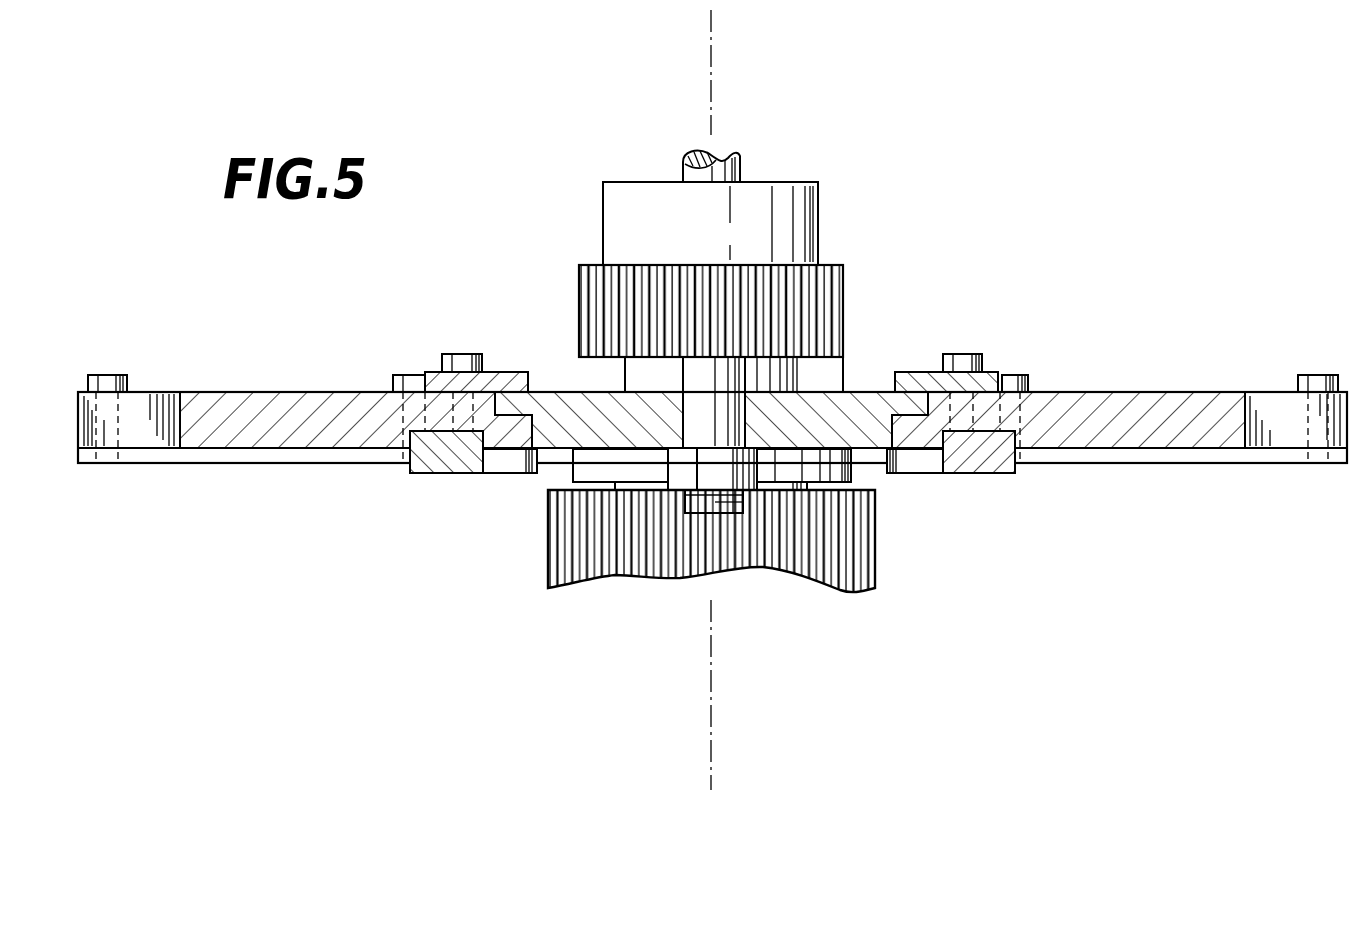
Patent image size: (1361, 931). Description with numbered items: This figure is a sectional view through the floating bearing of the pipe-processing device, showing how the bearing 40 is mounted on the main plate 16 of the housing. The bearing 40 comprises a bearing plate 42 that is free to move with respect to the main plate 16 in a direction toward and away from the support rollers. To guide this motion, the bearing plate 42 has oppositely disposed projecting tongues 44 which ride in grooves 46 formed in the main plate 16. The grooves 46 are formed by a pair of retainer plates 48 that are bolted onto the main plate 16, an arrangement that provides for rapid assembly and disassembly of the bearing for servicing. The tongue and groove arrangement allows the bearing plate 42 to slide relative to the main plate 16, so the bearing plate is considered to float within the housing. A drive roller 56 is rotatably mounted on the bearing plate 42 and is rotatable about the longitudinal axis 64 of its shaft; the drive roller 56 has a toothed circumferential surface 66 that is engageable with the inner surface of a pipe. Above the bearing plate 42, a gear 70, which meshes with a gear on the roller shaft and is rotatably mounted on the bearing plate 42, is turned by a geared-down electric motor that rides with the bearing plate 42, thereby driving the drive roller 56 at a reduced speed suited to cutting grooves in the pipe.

The main plate 16 is at (1140, 397).
The bearing 40 is at (843, 393).
The bearing plate 42 is at (575, 402).
The projecting tongues 44 is at (518, 388).
The grooves 46 is at (496, 410).
The retainer plates 48 is at (925, 372).
The drive roller 56 is at (867, 558).
The longitudinal axis 64 is at (711, 702).
The toothed circumferential surface 66 is at (565, 567).
The gear 70 is at (843, 300).